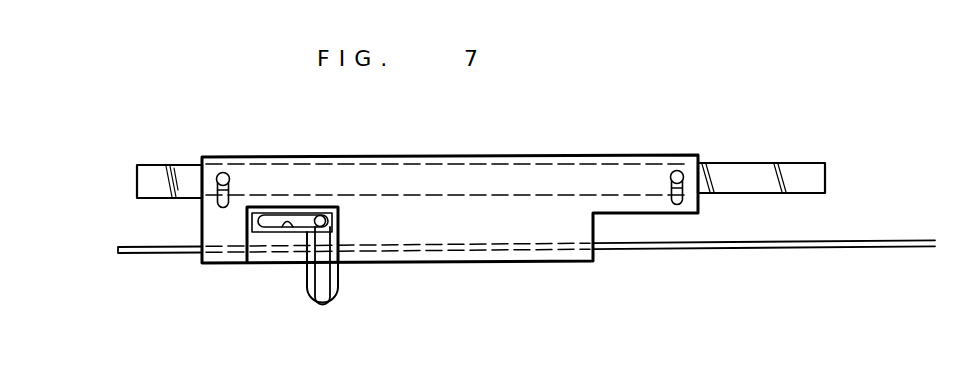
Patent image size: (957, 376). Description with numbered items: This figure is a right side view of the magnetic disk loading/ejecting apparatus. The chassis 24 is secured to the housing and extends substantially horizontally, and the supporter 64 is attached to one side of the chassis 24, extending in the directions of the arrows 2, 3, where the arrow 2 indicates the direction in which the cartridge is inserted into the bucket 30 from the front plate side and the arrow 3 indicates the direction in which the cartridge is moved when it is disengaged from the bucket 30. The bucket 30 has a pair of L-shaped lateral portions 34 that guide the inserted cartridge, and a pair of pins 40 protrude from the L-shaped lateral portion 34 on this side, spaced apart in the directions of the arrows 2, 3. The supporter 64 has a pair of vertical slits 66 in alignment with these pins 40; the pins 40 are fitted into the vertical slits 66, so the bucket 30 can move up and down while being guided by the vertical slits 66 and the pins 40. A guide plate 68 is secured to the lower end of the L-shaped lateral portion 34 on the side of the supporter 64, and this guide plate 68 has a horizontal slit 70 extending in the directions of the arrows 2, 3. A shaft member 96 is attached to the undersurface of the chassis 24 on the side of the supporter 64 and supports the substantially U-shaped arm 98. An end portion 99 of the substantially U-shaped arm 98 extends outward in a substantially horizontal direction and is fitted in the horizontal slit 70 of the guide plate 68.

The arrow 2 is at (113, 227).
The arrow 3 is at (60, 227).
The chassis 24 is at (150, 253).
The bucket 30 is at (170, 150).
The L-shaped lateral portion 34 is at (138, 186).
The pin 40 is at (222, 172).
The supporter 64 is at (414, 156).
The vertical slit 66 is at (229, 186).
The guide plate 68 is at (258, 232).
The horizontal slit 70 is at (286, 228).
The shaft member 96 is at (312, 301).
The substantially U-shaped arm 98 is at (331, 276).
The end portion 99 is at (327, 219).